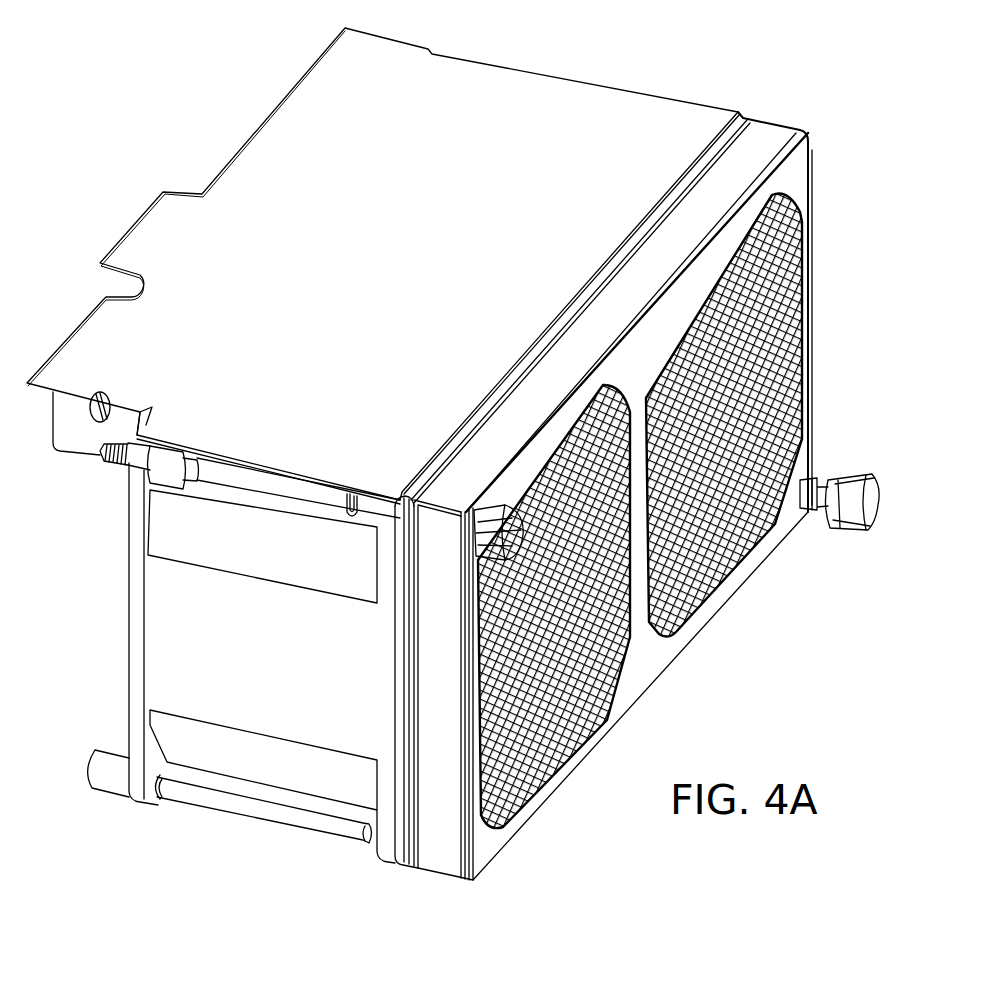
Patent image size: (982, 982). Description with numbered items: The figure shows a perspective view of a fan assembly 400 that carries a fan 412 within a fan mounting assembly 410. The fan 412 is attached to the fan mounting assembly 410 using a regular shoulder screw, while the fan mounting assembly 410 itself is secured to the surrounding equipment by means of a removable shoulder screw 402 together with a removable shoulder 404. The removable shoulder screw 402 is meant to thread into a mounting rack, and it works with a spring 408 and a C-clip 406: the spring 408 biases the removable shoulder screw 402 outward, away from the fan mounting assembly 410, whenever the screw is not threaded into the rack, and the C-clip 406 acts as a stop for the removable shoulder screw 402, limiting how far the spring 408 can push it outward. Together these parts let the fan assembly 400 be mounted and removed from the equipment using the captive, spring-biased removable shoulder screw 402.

The fan assembly 400 is at (186, 124).
The removable shoulder screw 402 is at (487, 517).
The removable shoulder 404 is at (167, 470).
The C-clip 406 is at (348, 512).
The spring 408 is at (812, 480).
The fan mounting assembly 410 is at (660, 123).
The fan 412 is at (131, 505).